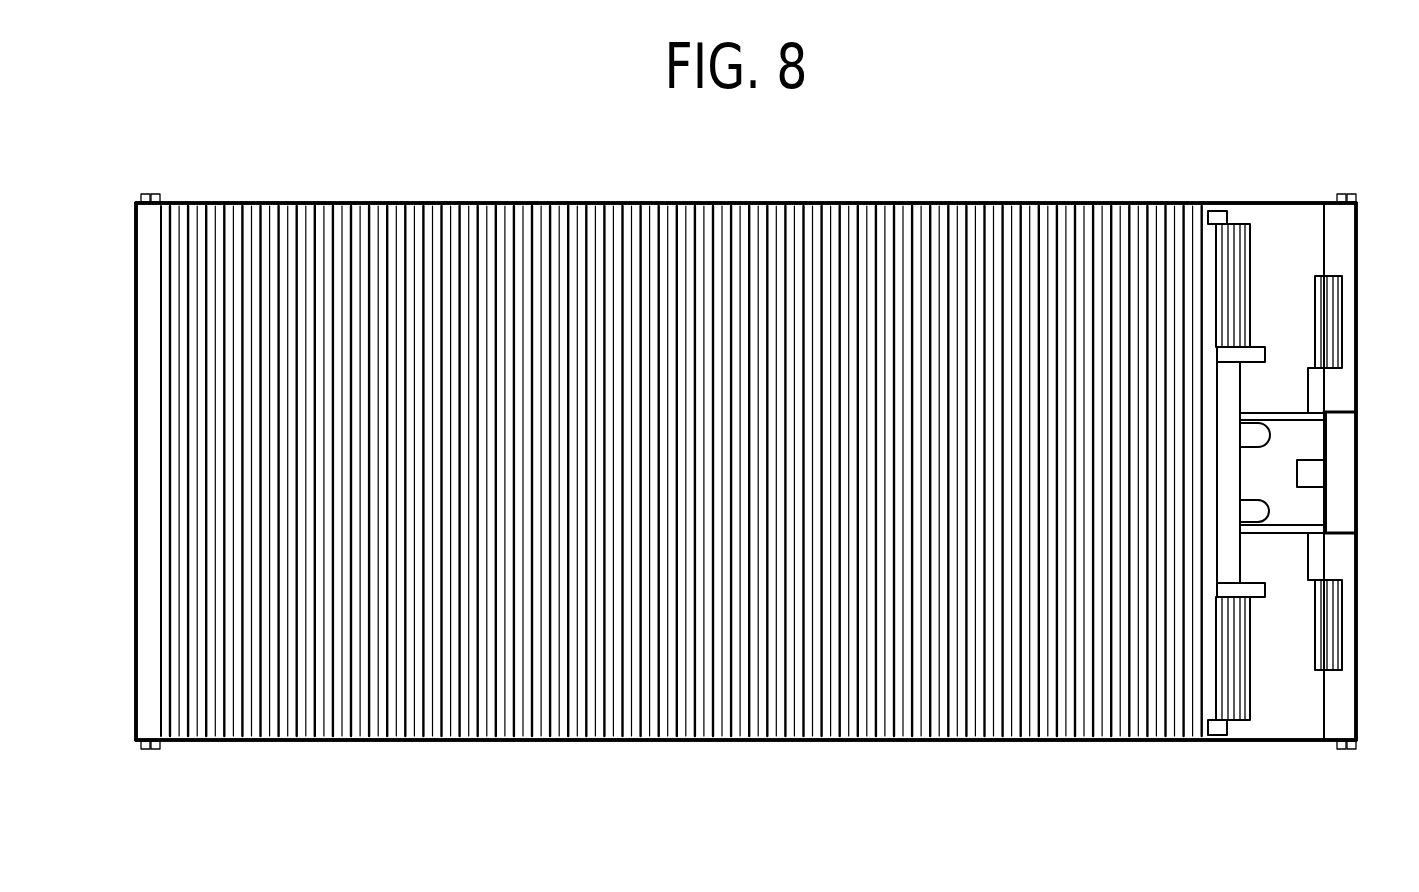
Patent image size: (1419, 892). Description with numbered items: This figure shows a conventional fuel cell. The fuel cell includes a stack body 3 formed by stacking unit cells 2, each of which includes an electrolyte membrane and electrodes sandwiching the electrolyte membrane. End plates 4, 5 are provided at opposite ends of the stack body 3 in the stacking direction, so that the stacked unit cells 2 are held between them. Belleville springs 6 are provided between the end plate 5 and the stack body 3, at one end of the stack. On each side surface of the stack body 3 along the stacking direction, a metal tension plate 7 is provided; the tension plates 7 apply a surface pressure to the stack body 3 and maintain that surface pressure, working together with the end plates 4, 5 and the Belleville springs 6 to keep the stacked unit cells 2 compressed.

The unit cell 2 is at (722, 742).
The stack body 3 is at (351, 188).
The end plate 4 is at (145, 711).
The end plate 5 is at (1338, 697).
The Belleville spring 6 is at (1252, 258).
The tension plate 7 is at (968, 201).